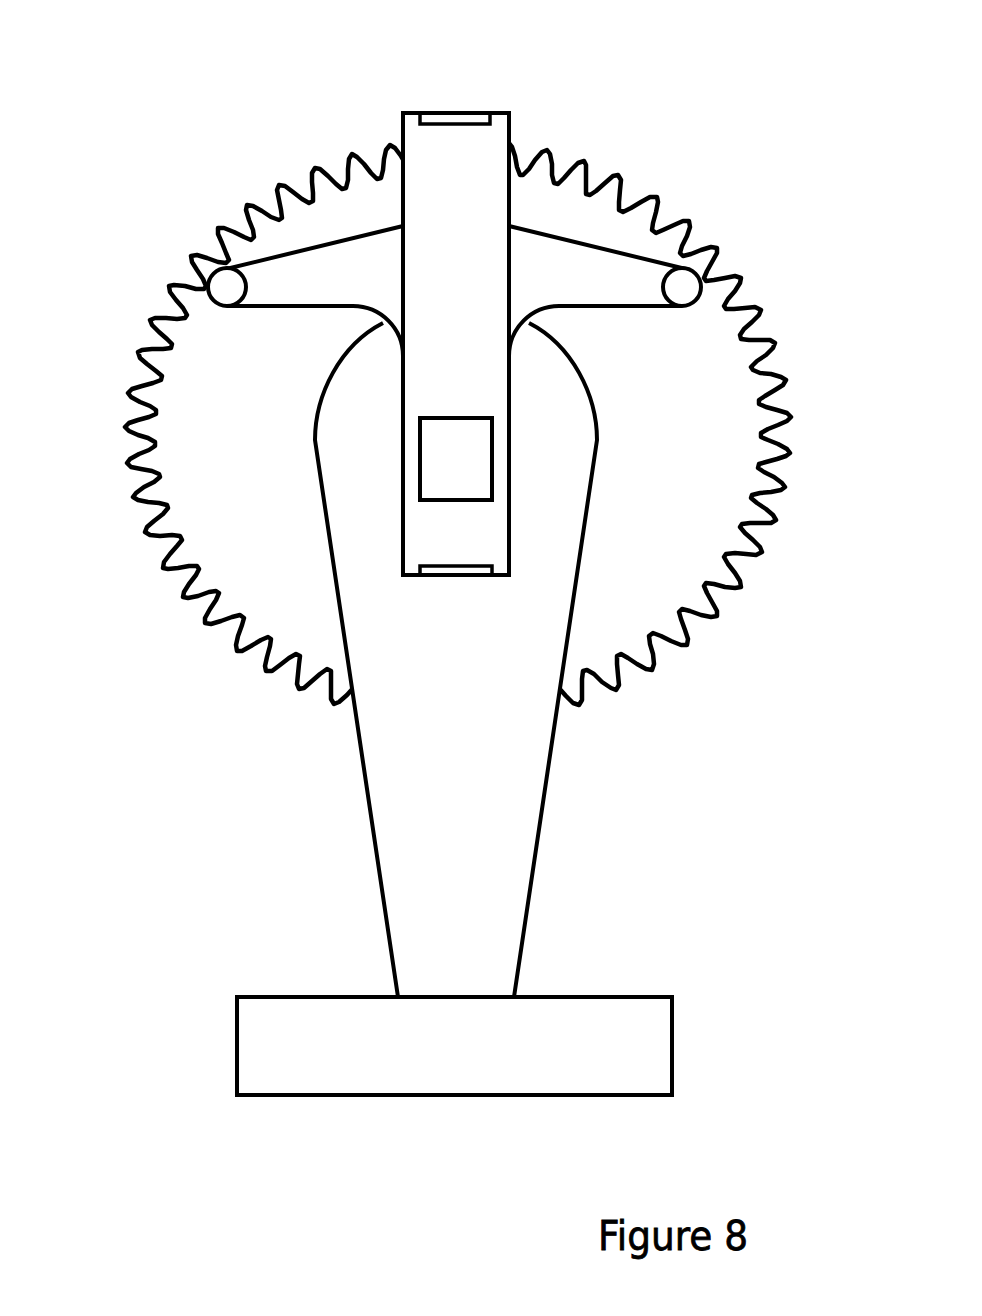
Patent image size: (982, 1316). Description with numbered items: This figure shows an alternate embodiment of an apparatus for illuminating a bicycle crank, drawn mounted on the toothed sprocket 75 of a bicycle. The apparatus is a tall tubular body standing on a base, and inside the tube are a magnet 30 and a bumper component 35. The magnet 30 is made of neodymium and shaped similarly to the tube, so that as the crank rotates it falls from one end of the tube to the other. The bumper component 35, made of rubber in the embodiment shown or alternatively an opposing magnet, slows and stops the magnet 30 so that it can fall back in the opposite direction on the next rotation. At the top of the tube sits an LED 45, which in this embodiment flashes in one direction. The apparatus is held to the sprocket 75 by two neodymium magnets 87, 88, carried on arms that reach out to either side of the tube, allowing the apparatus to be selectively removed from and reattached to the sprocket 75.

The magnet 30 is at (458, 458).
The bumper component 35 is at (445, 110).
The LED 45 is at (426, 110).
The sprocket 75 is at (682, 222).
The magnet 87 is at (233, 290).
The magnet 88 is at (692, 298).